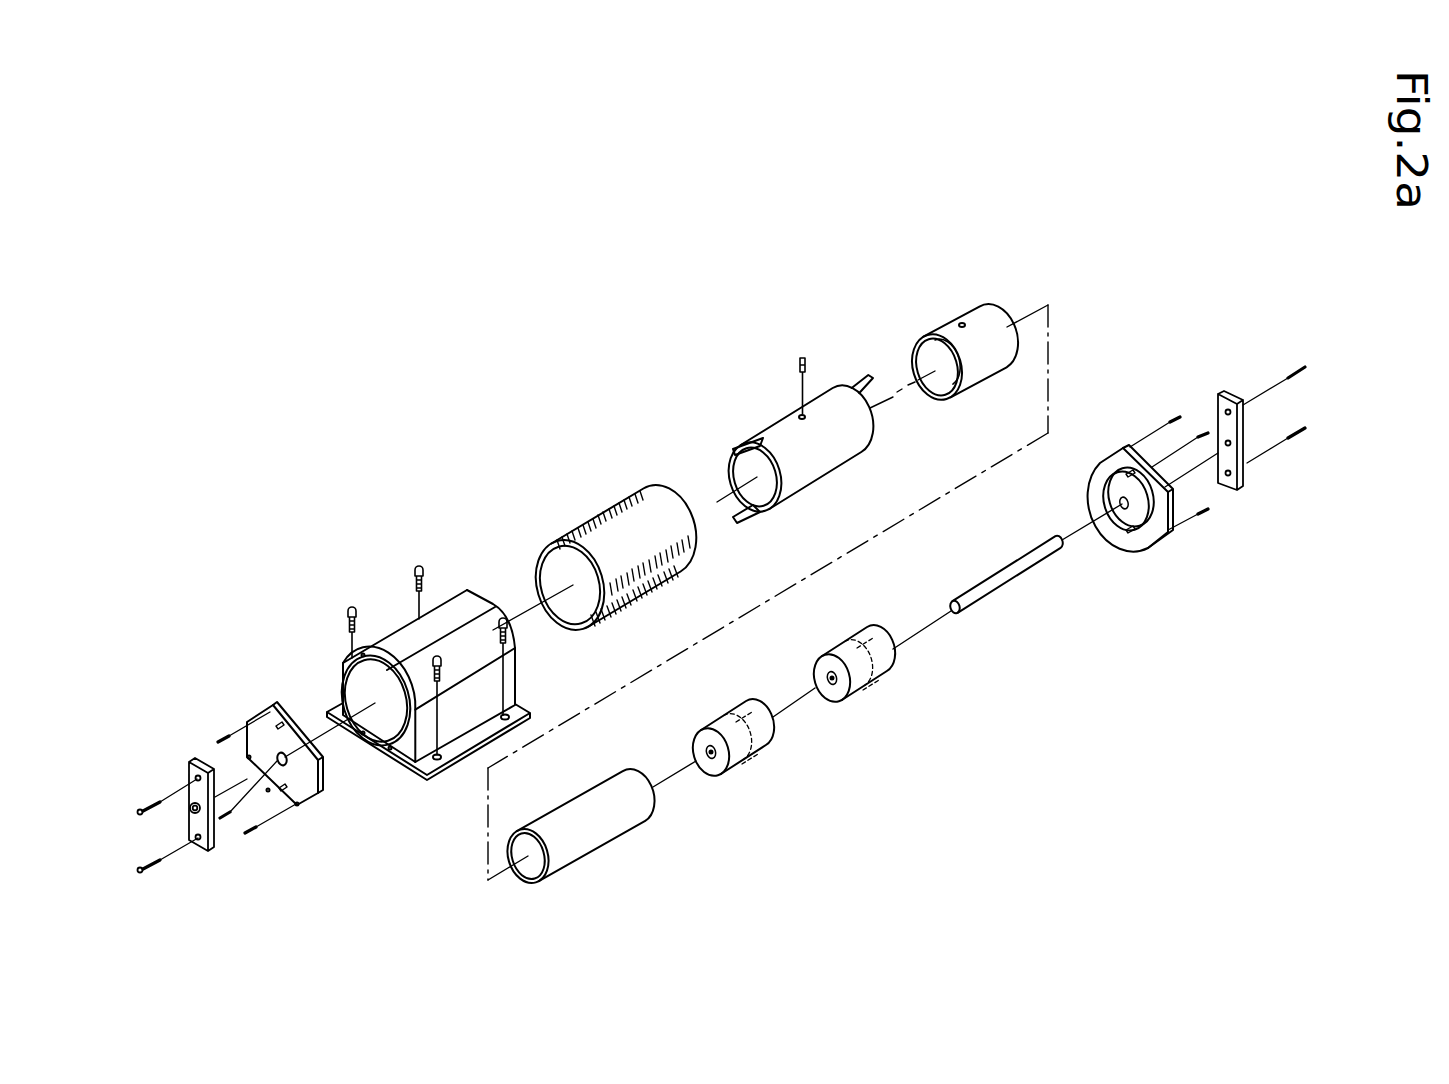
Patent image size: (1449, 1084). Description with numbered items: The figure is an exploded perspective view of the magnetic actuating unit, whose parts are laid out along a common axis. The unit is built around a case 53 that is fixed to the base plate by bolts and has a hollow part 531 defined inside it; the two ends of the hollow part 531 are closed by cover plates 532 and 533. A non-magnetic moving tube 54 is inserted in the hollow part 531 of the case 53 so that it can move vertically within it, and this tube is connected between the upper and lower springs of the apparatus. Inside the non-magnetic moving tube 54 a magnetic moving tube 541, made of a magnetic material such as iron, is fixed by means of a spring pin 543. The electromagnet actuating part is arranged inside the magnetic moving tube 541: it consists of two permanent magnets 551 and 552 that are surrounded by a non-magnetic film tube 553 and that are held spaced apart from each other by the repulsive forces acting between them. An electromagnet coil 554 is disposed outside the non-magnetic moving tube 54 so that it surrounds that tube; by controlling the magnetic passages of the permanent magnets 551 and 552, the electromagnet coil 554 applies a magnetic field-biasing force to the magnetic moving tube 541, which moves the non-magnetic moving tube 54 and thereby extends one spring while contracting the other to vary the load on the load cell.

The case 53 is at (396, 640).
The hollow part 531 is at (389, 723).
The cover plate 532 is at (1147, 547).
The cover plate 533 is at (305, 790).
The non-magnetic moving tube 54 is at (770, 437).
The magnetic moving tube 541 is at (946, 330).
The spring pin 543 is at (798, 353).
The permanent magnet 551 is at (743, 753).
The permanent magnet 552 is at (870, 683).
The non-magnetic film tube 553 is at (595, 837).
The electromagnet coil 554 is at (590, 525).